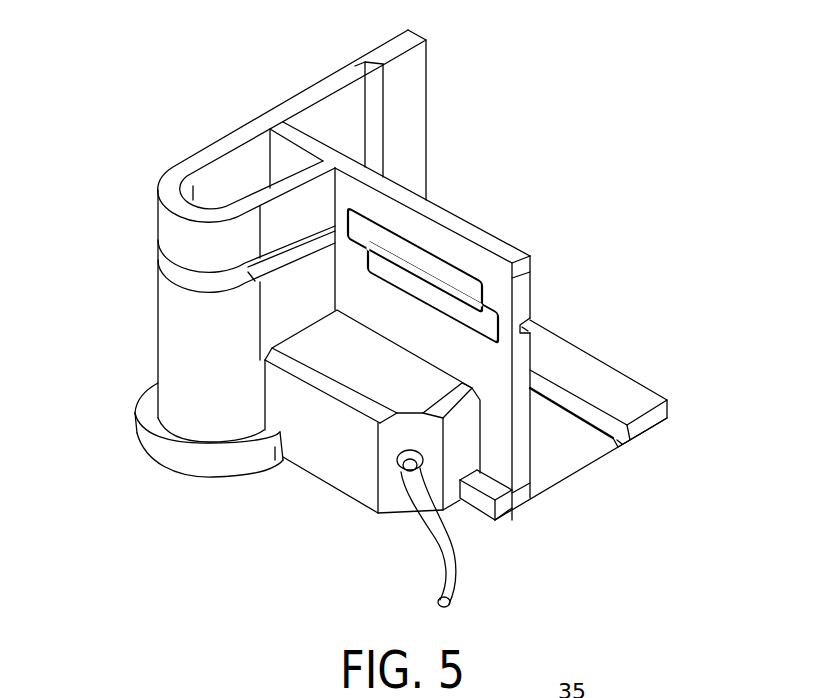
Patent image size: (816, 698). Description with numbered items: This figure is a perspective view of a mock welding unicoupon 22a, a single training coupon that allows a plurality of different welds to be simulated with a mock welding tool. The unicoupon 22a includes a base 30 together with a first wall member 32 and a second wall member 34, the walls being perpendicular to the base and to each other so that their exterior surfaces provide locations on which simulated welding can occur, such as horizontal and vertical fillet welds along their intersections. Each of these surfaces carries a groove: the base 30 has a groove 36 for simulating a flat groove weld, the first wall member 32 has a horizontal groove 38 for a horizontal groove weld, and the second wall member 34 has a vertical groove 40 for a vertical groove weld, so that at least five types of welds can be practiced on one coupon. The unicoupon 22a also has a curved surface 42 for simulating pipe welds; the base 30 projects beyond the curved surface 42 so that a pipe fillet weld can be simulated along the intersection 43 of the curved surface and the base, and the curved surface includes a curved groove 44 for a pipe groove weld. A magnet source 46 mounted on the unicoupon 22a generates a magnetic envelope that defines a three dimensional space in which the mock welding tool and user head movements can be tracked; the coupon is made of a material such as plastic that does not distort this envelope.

The mock welding unicoupon 22a is at (140, 76).
The base 30 is at (655, 430).
The first wall member 32 is at (453, 213).
The second wall member 34 is at (323, 78).
The groove 36 is at (618, 447).
The horizontal groove 38 is at (527, 321).
The vertical groove 40 is at (375, 101).
The curved surface 42 is at (198, 322).
The intersection 43 is at (135, 416).
The curved groove 44 is at (163, 265).
The magnet source 46 is at (322, 482).